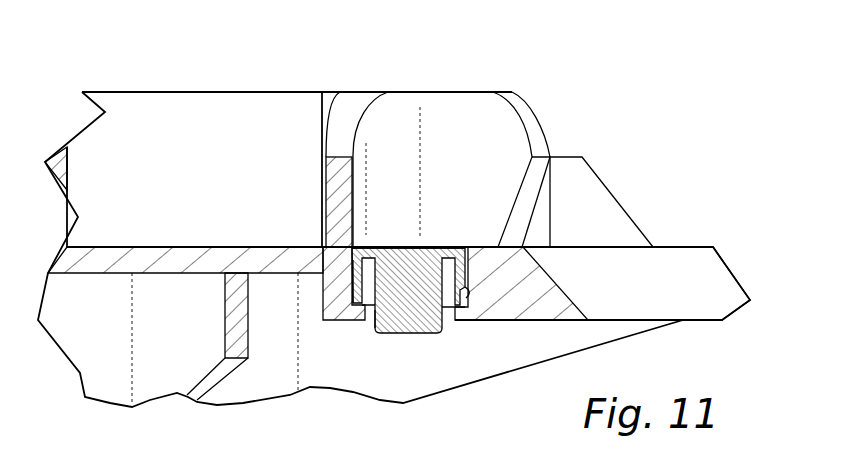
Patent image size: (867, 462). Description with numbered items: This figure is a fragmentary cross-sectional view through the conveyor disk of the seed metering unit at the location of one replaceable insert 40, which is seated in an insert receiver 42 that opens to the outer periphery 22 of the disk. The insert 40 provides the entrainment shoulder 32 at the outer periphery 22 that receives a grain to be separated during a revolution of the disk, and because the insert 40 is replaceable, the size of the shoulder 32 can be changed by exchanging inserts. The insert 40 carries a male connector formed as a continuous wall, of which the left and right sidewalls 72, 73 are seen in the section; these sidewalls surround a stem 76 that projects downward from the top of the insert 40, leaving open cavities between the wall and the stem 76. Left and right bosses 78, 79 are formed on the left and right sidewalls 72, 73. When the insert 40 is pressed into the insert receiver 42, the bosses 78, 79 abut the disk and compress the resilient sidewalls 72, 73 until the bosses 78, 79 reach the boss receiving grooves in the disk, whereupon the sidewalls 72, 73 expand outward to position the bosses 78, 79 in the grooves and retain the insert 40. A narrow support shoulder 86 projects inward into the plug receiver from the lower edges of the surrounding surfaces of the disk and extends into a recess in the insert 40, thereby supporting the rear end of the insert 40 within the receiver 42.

The outer periphery 22 is at (683, 261).
The entrainment shoulder 32 is at (333, 186).
The insert 40 is at (422, 301).
The insert receiver 42 is at (449, 247).
The left sidewall 72 is at (350, 272).
The right sidewall 73 is at (465, 272).
The stem 76 is at (377, 325).
The left boss 78 is at (352, 285).
The right boss 79 is at (470, 293).
The support shoulder 86 is at (366, 308).